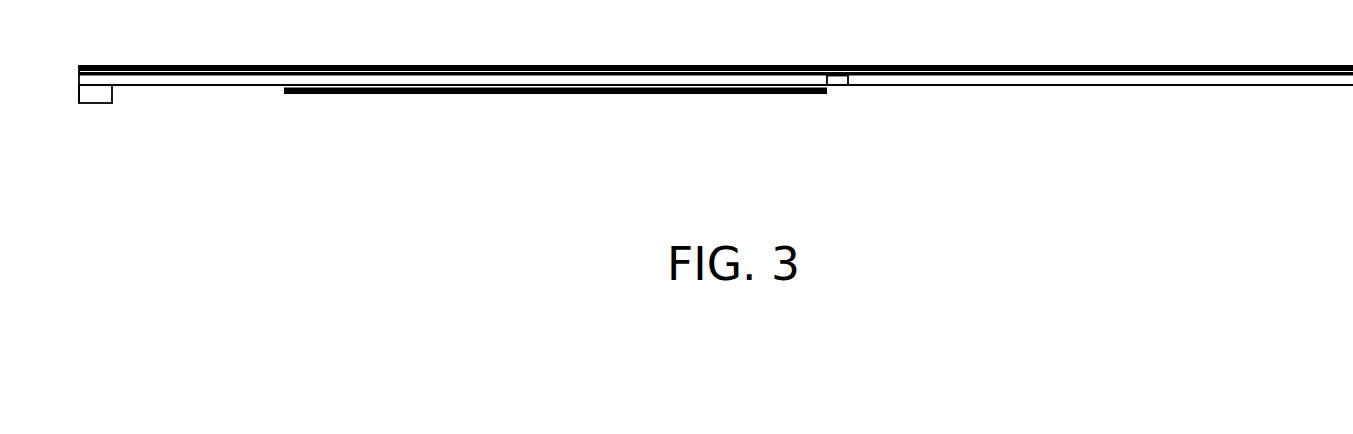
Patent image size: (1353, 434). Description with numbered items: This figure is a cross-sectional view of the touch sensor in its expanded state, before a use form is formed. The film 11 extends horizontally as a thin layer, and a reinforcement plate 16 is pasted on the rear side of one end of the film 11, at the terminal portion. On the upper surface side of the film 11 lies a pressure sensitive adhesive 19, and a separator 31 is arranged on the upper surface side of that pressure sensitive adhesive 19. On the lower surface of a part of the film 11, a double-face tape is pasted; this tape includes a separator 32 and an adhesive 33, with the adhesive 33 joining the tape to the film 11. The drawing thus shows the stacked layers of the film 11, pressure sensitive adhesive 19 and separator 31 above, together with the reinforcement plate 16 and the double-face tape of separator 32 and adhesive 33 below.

The film 11 is at (257, 87).
The reinforcement plate 16 is at (98, 98).
The pressure sensitive adhesive 19 is at (430, 66).
The separator 31 is at (326, 66).
The separator 32 is at (798, 95).
The adhesive 33 is at (826, 86).